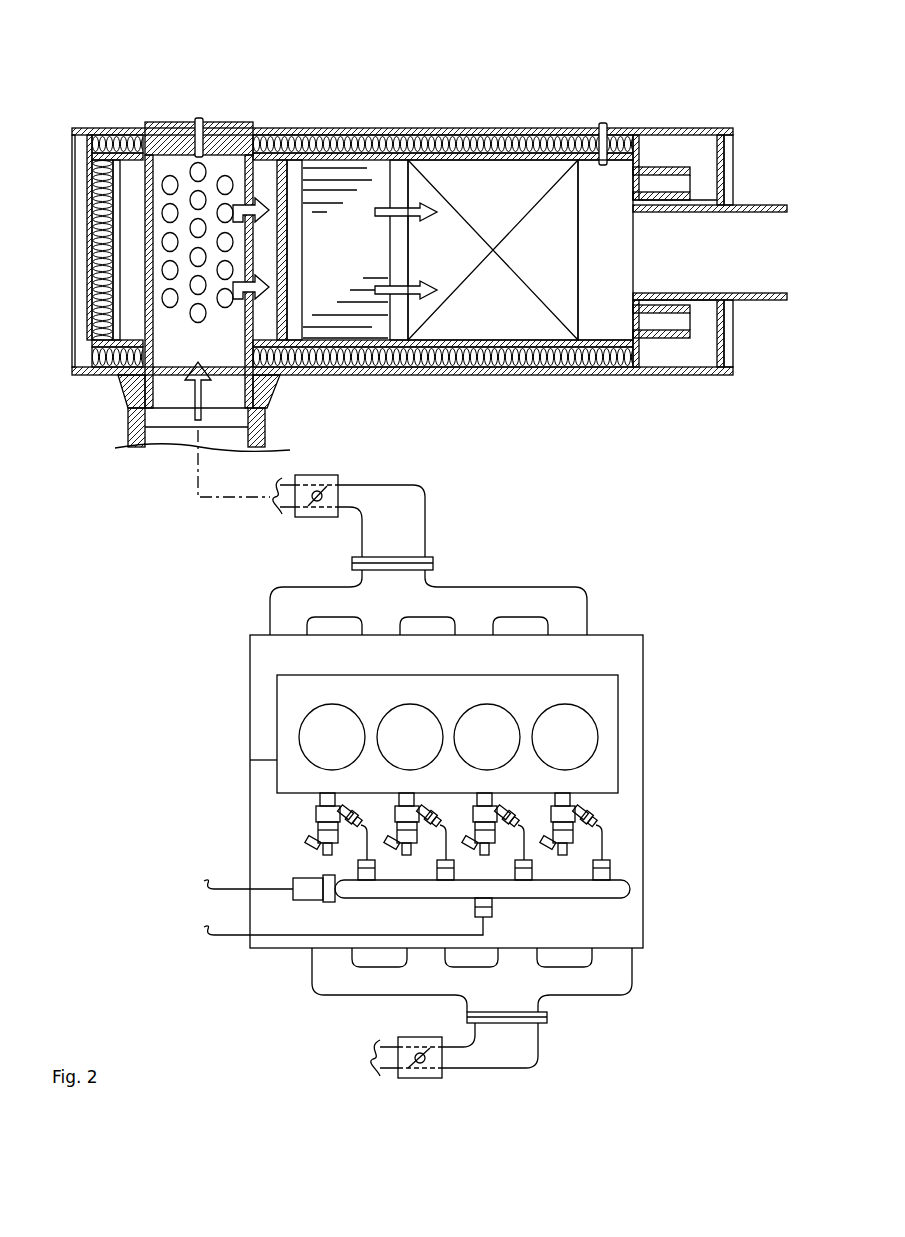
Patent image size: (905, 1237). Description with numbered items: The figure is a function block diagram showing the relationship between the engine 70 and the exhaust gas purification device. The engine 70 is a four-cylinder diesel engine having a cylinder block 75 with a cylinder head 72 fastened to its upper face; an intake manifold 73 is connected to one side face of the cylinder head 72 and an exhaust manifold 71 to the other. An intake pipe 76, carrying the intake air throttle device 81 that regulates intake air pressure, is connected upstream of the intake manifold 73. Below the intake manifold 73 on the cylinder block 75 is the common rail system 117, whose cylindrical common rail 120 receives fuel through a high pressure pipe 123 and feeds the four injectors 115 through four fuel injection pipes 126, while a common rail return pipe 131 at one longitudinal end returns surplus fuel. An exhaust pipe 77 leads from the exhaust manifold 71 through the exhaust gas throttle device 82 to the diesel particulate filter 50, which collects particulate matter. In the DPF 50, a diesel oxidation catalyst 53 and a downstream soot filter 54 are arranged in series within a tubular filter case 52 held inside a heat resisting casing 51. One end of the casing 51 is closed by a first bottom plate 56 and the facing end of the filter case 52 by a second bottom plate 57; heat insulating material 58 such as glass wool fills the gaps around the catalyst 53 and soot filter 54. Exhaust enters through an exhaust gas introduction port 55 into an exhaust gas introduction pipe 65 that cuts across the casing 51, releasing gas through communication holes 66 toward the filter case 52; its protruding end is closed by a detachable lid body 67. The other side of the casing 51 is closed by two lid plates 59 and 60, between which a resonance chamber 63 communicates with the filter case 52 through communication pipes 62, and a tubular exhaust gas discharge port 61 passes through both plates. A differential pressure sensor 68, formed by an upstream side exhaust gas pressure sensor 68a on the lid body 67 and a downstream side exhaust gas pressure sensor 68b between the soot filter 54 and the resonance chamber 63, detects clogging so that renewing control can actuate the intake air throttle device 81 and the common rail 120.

The diesel particulate filter 50 is at (107, 108).
The casing 51 is at (512, 130).
The filter case 52 is at (596, 340).
The diesel oxidation catalyst 53 is at (340, 178).
The soot filter 54 is at (456, 170).
The exhaust gas introduction port 55 is at (160, 440).
The first bottom plate 56 is at (77, 329).
The second bottom plate 57 is at (127, 260).
The heat insulating material 58 is at (77, 210).
The lid plate 59 is at (637, 357).
The lid plate 60 is at (722, 328).
The exhaust gas discharge port 61 is at (740, 205).
The communication pipes 62 is at (683, 165).
The resonance chamber 63 is at (692, 358).
The exhaust gas introduction pipe 65 is at (268, 385).
The communication holes 66 is at (170, 308).
The lid body 67 is at (230, 125).
The differential pressure sensor 68 is at (390, 107).
The upstream side exhaust gas pressure sensor 68a is at (198, 118).
The downstream side exhaust gas pressure sensor 68b is at (615, 140).
The engine 70 is at (635, 685).
The exhaust manifold 71 is at (497, 595).
The cylinder head 72 is at (283, 723).
The intake manifold 73 is at (585, 990).
The cylinder block 75 is at (260, 763).
The intake pipe 76 is at (515, 1045).
The exhaust pipe 77 is at (408, 528).
The intake air throttle device 81 is at (412, 1080).
The exhaust gas throttle device 82 is at (317, 475).
The injectors 115 is at (318, 813).
The common rail system 117 is at (612, 915).
The common rail 120 is at (513, 893).
The high pressure pipe 123 is at (329, 938).
The fuel injection pipes 126 is at (458, 843).
The common rail return pipe 131 is at (234, 897).